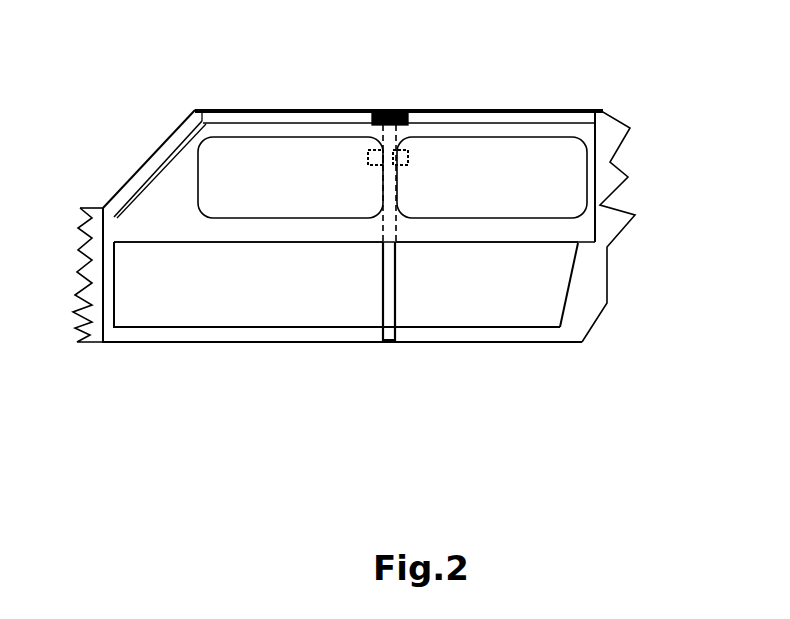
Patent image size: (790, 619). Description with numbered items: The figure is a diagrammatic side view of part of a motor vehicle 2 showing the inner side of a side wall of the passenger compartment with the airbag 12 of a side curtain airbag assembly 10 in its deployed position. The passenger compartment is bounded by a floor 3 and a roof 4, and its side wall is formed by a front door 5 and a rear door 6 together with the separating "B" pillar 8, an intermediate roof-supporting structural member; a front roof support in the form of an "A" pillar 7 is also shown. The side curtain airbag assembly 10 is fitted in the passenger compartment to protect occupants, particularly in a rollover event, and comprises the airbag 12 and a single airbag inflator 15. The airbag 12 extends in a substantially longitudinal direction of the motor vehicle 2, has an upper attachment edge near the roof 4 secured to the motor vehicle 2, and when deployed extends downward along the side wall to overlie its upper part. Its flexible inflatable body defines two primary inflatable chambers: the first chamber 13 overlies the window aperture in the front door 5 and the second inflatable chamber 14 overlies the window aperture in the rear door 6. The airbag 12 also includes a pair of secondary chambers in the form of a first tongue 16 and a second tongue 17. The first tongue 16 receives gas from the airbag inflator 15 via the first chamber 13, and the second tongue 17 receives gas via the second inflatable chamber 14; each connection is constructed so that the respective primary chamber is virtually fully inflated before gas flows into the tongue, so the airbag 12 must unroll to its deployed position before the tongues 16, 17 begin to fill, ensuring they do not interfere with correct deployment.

The motor vehicle 2 is at (582, 345).
The floor 3 is at (178, 342).
The roof 4 is at (596, 111).
The front door 5 is at (278, 327).
The rear door 6 is at (493, 327).
The "A" pillar 7 is at (163, 150).
The "B" pillar 8 is at (396, 336).
The side curtain airbag assembly 10 is at (222, 104).
The airbag 12 is at (644, 186).
The first chamber 13 is at (277, 136).
The second inflatable chamber 14 is at (497, 147).
The airbag inflator 15 is at (385, 110).
The first tongue 16 is at (343, 136).
The second tongue 17 is at (440, 136).